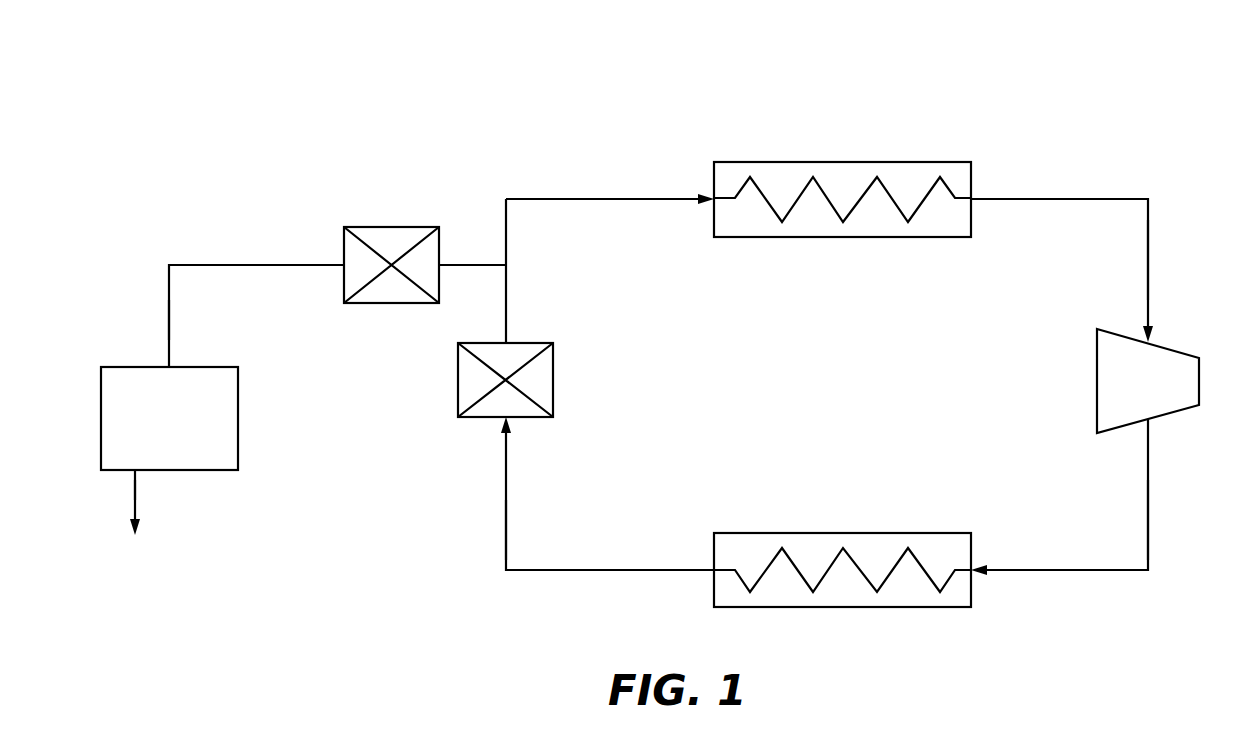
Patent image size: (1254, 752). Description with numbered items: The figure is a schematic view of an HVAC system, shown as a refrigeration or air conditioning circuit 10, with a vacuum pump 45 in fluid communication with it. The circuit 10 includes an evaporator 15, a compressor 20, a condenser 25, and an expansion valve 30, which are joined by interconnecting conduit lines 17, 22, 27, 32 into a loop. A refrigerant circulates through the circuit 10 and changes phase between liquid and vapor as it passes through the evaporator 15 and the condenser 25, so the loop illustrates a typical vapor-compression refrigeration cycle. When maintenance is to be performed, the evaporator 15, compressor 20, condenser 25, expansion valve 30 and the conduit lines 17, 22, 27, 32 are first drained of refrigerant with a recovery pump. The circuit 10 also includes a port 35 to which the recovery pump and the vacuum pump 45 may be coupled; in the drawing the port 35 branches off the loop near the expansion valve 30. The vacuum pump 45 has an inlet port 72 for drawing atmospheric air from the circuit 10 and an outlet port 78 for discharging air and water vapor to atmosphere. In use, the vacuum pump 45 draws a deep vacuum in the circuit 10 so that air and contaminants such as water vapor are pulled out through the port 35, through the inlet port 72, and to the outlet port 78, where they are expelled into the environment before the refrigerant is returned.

The air conditioning circuit 10 is at (1065, 85).
The evaporator 15 is at (787, 162).
The conduit line 17 is at (1047, 198).
The compressor 20 is at (1168, 413).
The conduit line 22 is at (1111, 571).
The condenser 25 is at (863, 608).
The conduit line 27 is at (540, 571).
The expansion valve 30 is at (478, 418).
The conduit line 32 is at (590, 197).
The port 35 is at (463, 263).
The vacuum pump 45 is at (238, 427).
The inlet port 72 is at (169, 320).
The outlet port 78 is at (133, 500).